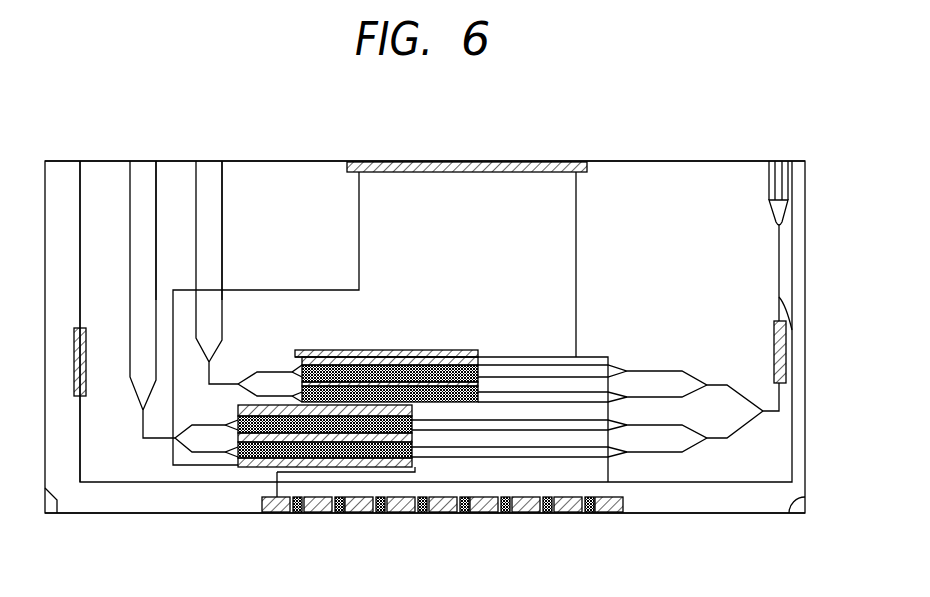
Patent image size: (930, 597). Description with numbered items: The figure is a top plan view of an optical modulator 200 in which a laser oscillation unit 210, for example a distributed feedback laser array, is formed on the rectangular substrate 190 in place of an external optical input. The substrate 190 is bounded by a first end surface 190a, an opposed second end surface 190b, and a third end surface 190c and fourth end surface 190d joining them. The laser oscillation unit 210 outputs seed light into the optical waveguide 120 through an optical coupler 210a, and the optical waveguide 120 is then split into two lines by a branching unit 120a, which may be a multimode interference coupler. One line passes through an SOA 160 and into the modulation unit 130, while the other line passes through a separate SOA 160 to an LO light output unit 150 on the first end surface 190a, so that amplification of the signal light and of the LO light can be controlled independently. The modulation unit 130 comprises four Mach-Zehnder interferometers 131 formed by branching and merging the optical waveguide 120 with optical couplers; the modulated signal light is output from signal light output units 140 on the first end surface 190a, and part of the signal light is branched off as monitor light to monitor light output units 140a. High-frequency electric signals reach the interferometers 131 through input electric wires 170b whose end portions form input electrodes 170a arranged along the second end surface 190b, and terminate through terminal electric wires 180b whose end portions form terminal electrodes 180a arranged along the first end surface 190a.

The optical modulator 200 is at (79, 78).
The substrate 190 is at (120, 500).
The first end surface 190a is at (300, 161).
The second end surface 190b is at (185, 513).
The third end surface 190c is at (55, 513).
The fourth end surface 190d is at (790, 513).
The LO light output unit 150 is at (80, 161).
The SOA 160 is at (86, 330).
The signal light output unit 140 is at (130, 161).
The monitor light output unit 140a is at (156, 161).
The terminal electrode 180a is at (360, 163).
The terminal electric wire 180b is at (359, 213).
The input electric wire 170b is at (609, 466).
The modulation unit 130 is at (452, 440).
The Mach-Zehnder interferometer 131 is at (523, 450).
The input electrode 170a is at (607, 513).
The laser oscillation unit 210 is at (783, 161).
The optical coupler 210a is at (769, 212).
The optical waveguide 120 is at (779, 255).
The branching unit 120a is at (779, 300).